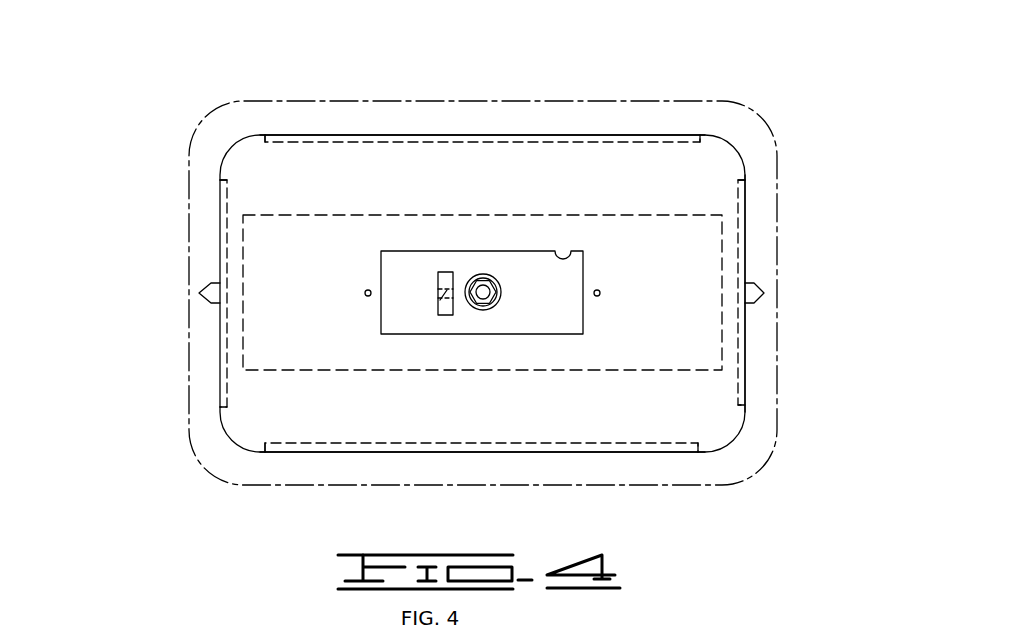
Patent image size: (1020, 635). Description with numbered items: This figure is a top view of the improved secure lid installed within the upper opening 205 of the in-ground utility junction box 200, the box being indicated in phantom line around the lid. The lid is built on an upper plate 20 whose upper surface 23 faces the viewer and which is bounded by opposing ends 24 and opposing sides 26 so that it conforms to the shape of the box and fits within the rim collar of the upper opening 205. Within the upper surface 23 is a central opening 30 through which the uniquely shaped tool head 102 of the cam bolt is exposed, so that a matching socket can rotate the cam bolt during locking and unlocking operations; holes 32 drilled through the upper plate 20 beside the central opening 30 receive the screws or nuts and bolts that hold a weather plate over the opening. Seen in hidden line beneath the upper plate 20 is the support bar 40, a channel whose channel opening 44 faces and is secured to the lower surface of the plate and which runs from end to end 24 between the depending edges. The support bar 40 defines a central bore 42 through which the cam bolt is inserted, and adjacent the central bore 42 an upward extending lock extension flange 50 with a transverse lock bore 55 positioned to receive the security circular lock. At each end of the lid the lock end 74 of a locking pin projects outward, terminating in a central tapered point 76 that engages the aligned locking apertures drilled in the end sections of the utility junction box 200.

The in-ground utility junction box 200 is at (772, 133).
The upper opening 205 is at (327, 135).
The upper plate 20 is at (253, 420).
The upper surface 23 is at (647, 425).
The opposing ends 24 is at (745, 380).
The opposing sides 26 is at (669, 135).
The central opening 30 is at (583, 251).
The holes 32 is at (601, 291).
The support bar 40 is at (283, 213).
The central bore 42 is at (485, 312).
The channel opening 44 is at (390, 313).
The lock extension flange 50 is at (449, 272).
The transverse lock bore 55 is at (448, 297).
The lock end 74 is at (766, 296).
The central tapered point 76 is at (207, 302).
The tool head 102 is at (484, 280).